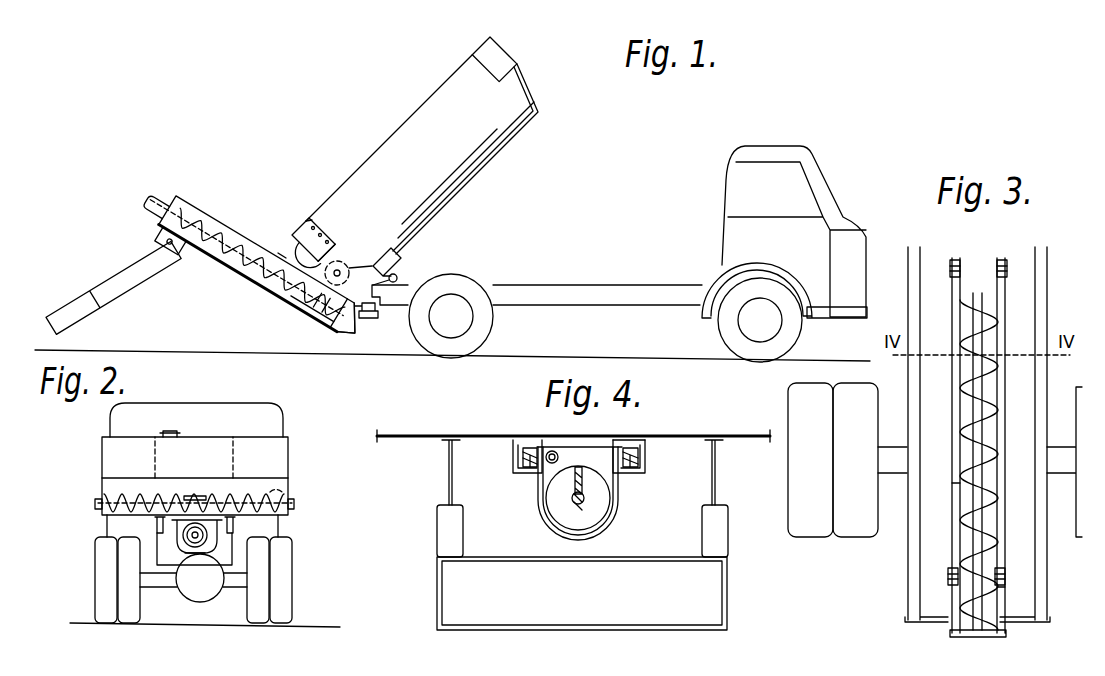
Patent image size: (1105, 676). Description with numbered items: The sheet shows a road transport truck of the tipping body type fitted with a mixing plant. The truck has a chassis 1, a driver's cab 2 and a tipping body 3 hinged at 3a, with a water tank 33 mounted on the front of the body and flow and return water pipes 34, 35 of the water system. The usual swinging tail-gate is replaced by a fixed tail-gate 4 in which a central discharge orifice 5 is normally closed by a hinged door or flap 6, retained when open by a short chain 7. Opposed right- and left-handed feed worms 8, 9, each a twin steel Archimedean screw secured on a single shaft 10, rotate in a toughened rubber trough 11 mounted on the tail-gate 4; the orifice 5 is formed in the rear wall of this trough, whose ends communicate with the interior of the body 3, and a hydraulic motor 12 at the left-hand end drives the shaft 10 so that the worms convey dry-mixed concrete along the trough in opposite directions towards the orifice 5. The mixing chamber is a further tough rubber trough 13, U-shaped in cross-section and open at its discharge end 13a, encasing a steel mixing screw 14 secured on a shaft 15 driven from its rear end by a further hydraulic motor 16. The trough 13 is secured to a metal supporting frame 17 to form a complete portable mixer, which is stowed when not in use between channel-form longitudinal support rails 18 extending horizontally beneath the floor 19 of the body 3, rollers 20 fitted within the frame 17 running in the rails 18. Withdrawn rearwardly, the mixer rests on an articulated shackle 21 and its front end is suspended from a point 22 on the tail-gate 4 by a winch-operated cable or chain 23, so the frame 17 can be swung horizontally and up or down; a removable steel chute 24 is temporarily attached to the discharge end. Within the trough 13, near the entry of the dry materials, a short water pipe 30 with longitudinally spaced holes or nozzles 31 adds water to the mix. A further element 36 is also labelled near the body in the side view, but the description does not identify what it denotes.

In FIG. 1, the chassis 1 is at (508, 296).
In FIG. 2, the chassis 1 is at (227, 560).
In FIG. 4, the chassis 1 is at (727, 578).
In FIG. 3, the chassis 1 is at (926, 549).
In FIG. 1, the driver's cab 2 is at (847, 221).
In FIG. 2, the driver's cab 2 is at (282, 415).
In FIG. 1, the tipping body 3 is at (388, 133).
In FIG. 1, the hinge point 3a is at (397, 277).
In FIG. 1, the fixed tail-gate 4 is at (328, 233).
In FIG. 2, the fixed tail-gate 4 is at (283, 458).
In FIG. 1, the central discharge orifice 5 is at (349, 328).
In FIG. 2, the central discharge orifice 5 is at (190, 490).
In FIG. 1, the hinged door or flap 6 is at (288, 247).
In FIG. 2, the hinged door or flap 6 is at (217, 493).
In FIG. 1, the short chain 7 is at (297, 228).
In FIG. 1, the right-handed feed worm 8 is at (350, 253).
In FIG. 2, the right-handed feed worm 8 is at (278, 520).
In FIG. 2, the left-handed feed worm 9 is at (108, 523).
In FIG. 1, the shaft 10 is at (340, 268).
In FIG. 2, the shaft 10 is at (277, 492).
In FIG. 1, the trough 11 is at (290, 297).
In FIG. 2, the trough 11 is at (111, 479).
In FIG. 2, the hydraulic motor 12 is at (102, 503).
In FIG. 1, the trough 13 is at (207, 257).
In FIG. 2, the trough 13 is at (170, 540).
In FIG. 4, the trough 13 is at (618, 517).
In FIG. 3, the trough 13 is at (990, 515).
In FIG. 1, the discharge end 13a is at (158, 231).
In FIG. 1, the mixing screw 14 is at (194, 213).
In FIG. 2, the mixing screw 14 is at (187, 553).
In FIG. 4, the mixing screw 14 is at (567, 527).
In FIG. 3, the mixing screw 14 is at (953, 527).
In FIG. 1, the shaft 15 is at (222, 233).
In FIG. 2, the shaft 15 is at (207, 563).
In FIG. 4, the shaft 15 is at (570, 497).
In FIG. 1, the hydraulic motor 16 is at (163, 202).
In FIG. 2, the hydraulic motor 16 is at (158, 527).
In FIG. 2, the supporting frame 17 is at (233, 527).
In FIG. 4, the supporting frame 17 is at (627, 440).
In FIG. 4, the support rails 18 is at (513, 442).
In FIG. 3, the support rails 18 is at (952, 483).
In FIG. 1, the floor 19 is at (450, 177).
In FIG. 4, the floor 19 is at (770, 435).
In FIG. 4, the rollers 20 is at (533, 472).
In FIG. 3, the rollers 20 is at (1000, 270).
In FIG. 1, the articulated shackle 21 is at (375, 318).
In FIG. 1, the suspension point 22 is at (312, 220).
In FIG. 1, the winch-operated cable or chain 23 is at (278, 253).
In FIG. 1, the removable steel chute 24 is at (110, 296).
In FIG. 1, the water pipe 30 is at (317, 318).
In FIG. 2, the water pipe 30 is at (199, 493).
In FIG. 4, the water pipe 30 is at (553, 451).
In FIG. 1, the holes or nozzles 31 is at (303, 313).
In FIG. 1, the water tank 33 is at (500, 57).
In FIG. 2, the water tank 33 is at (148, 443).
In FIG. 1, the flow water pipe 34 is at (523, 87).
In FIG. 1, the return water pipe 35 is at (497, 143).
In FIG. 1, the hydraulic cylinder 36 is at (387, 250).